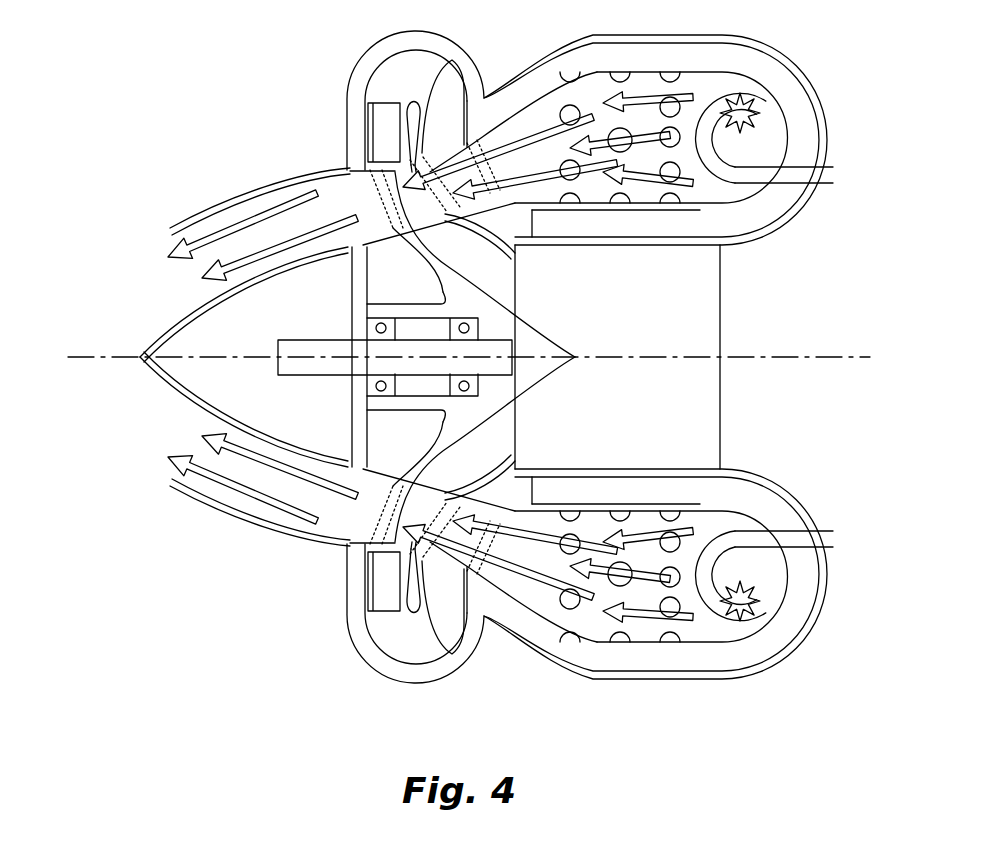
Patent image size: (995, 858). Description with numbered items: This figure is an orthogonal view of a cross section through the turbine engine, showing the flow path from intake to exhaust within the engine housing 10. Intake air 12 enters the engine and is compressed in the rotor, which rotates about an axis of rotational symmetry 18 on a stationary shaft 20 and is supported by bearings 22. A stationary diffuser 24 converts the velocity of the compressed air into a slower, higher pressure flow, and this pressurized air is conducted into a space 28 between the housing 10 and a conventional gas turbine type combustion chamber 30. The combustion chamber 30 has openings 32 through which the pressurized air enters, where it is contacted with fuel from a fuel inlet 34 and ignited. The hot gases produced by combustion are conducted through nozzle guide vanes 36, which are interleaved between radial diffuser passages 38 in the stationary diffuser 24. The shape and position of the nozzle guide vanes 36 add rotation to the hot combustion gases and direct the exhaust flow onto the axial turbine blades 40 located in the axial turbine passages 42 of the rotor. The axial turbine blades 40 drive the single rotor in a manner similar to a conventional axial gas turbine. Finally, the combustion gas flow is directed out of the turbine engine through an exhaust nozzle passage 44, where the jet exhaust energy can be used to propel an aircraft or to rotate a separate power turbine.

The engine housing 10 is at (658, 34).
The intake air 12 is at (762, 309).
The axis of rotational symmetry 18 is at (753, 356).
The stationary shaft 20 is at (331, 339).
The bearings 22 is at (377, 318).
The stationary diffuser 24 is at (425, 108).
The space 28 is at (609, 345).
The combustion chamber 30 is at (555, 198).
The openings 32 is at (553, 121).
The fuel inlet 34 is at (716, 116).
The nozzle guide vanes 36 is at (474, 165).
The radial diffuser passages 38 is at (455, 140).
The axial turbine blades 40 is at (385, 195).
The axial turbine passages 42 is at (347, 165).
The exhaust nozzle passage 44 is at (268, 244).